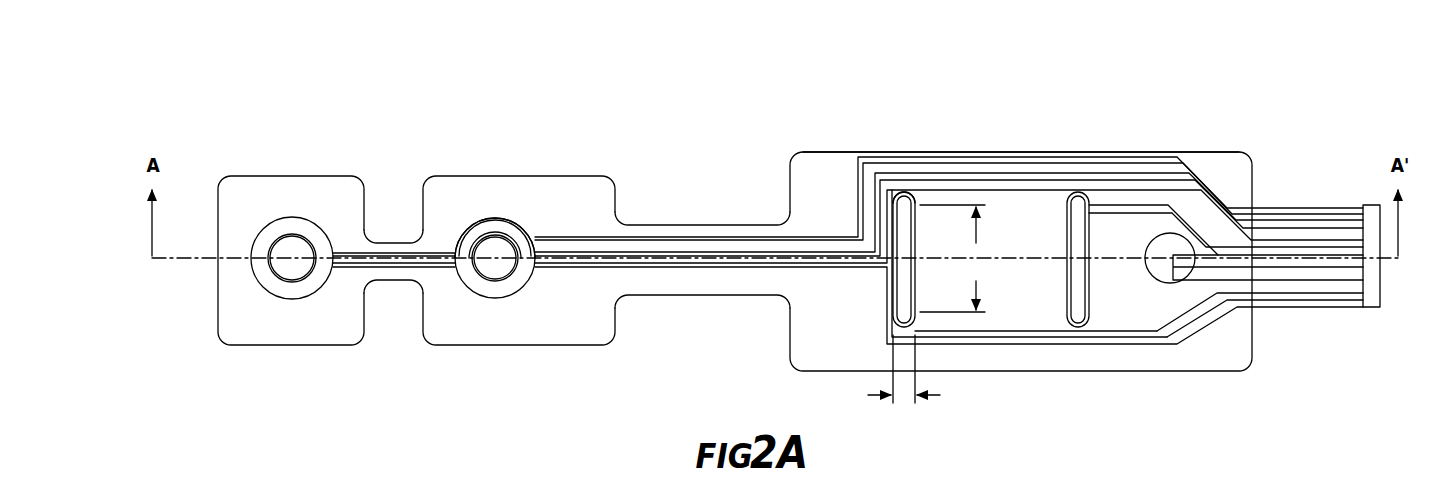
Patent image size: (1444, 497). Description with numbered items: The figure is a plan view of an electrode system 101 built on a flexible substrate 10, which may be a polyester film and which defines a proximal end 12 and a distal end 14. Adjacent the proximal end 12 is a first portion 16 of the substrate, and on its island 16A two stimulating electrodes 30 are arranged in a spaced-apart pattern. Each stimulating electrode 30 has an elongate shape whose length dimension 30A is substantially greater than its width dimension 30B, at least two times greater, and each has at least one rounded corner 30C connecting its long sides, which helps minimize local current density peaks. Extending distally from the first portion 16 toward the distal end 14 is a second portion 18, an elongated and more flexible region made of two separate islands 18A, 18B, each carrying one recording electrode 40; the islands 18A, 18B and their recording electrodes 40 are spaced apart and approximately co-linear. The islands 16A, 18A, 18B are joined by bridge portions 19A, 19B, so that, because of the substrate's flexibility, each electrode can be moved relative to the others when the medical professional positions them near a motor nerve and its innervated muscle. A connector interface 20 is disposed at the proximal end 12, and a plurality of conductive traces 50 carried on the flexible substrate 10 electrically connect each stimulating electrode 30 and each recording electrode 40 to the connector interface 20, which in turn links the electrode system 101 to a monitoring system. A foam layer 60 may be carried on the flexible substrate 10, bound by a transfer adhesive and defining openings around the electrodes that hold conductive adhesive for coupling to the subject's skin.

The electrode system 101 is at (735, 94).
The distal end 14 is at (192, 160).
The second portion 18 is at (383, 120).
The island 18A is at (252, 174).
The island 18B is at (465, 173).
The bridge portion 19A is at (391, 282).
The bridge portion 19B is at (688, 297).
The recording electrode 40 is at (292, 267).
The conductive trace 50 is at (393, 251).
The first portion 16 is at (1022, 101).
The island 16A is at (1054, 148).
The foam layer 60 is at (826, 145).
The flexible substrate 10 is at (1015, 315).
The stimulating electrode 30 is at (909, 317).
The length dimension 30A is at (958, 258).
The width dimension 30B is at (904, 384).
The rounded corner 30C is at (907, 193).
The proximal end 12 is at (1373, 131).
The connector interface 20 is at (1373, 307).